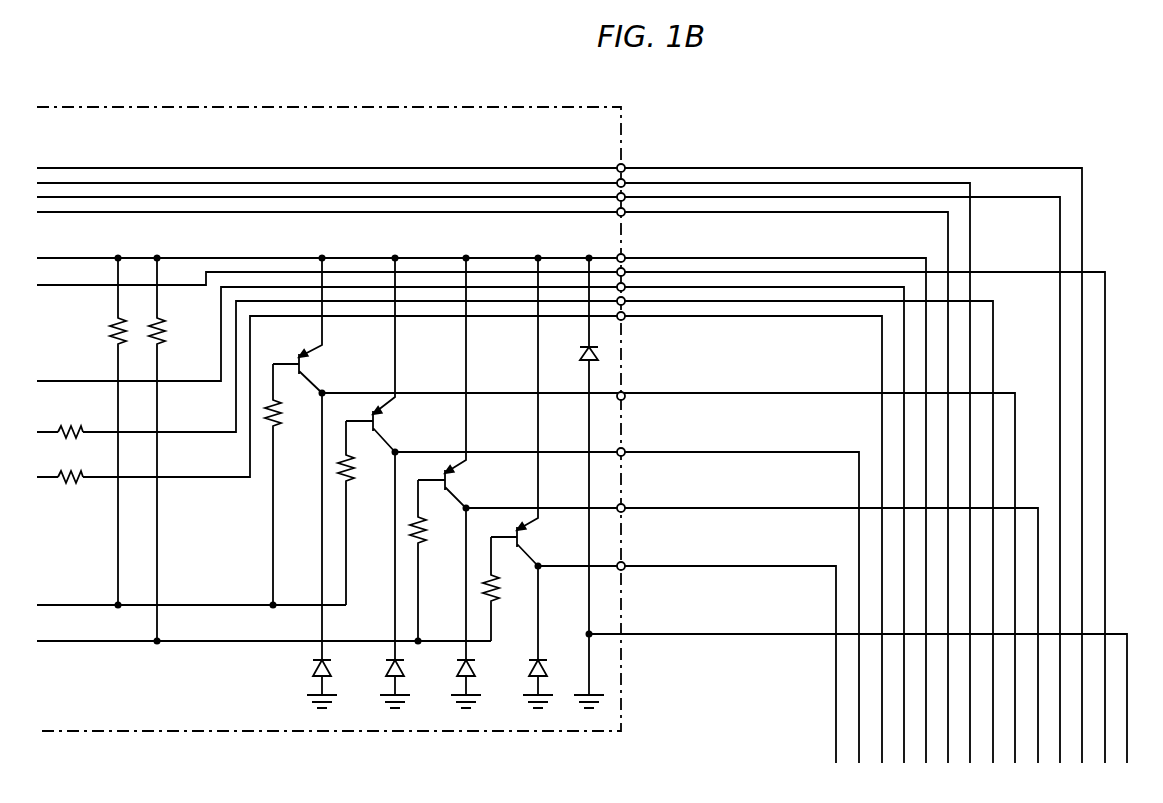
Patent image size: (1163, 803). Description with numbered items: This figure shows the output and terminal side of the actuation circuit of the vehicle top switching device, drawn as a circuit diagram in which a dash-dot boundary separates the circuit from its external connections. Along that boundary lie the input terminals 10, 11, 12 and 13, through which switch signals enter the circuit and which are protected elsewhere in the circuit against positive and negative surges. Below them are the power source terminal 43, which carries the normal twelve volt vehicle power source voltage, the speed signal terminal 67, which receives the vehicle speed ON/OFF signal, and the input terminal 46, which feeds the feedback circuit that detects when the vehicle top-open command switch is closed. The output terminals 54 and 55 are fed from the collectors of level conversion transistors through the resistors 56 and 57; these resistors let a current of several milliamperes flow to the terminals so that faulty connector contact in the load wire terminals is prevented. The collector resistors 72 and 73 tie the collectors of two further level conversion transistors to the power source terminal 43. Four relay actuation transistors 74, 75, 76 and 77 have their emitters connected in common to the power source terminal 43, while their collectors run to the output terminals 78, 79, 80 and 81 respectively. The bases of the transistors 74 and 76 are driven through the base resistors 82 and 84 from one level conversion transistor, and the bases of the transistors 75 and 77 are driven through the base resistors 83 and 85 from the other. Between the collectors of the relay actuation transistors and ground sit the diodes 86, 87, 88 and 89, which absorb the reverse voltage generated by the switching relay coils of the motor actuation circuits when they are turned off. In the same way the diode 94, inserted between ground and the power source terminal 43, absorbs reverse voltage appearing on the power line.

The input terminal 10 is at (625, 168).
The input terminal 11 is at (625, 183).
The input terminal 12 is at (625, 197).
The input terminal 13 is at (625, 212).
The power source terminal 43 is at (625, 258).
The speed signal terminal 67 is at (625, 272).
The input terminal 46 is at (625, 287).
The output terminal 54 is at (625, 301).
The output terminal 55 is at (625, 316).
The resistor 56 is at (69, 422).
The resistor 57 is at (69, 470).
The collector resistor 72 is at (111, 326).
The collector resistor 73 is at (163, 331).
The relay actuation transistor 74 is at (449, 479).
The relay actuation transistor 75 is at (303, 364).
The relay actuation transistor 76 is at (521, 536).
The relay actuation transistor 77 is at (377, 421).
The output terminal 78 is at (621, 503).
The output terminal 79 is at (621, 391).
The output terminal 80 is at (621, 561).
The output terminal 81 is at (621, 447).
The base resistor 82 is at (428, 529).
The base resistor 83 is at (283, 414).
The base resistor 84 is at (500, 587).
The base resistor 85 is at (355, 471).
The diode 86 is at (458, 668).
The diode 87 is at (314, 668).
The diode 88 is at (530, 668).
The diode 89 is at (387, 668).
The diode 94 is at (583, 352).